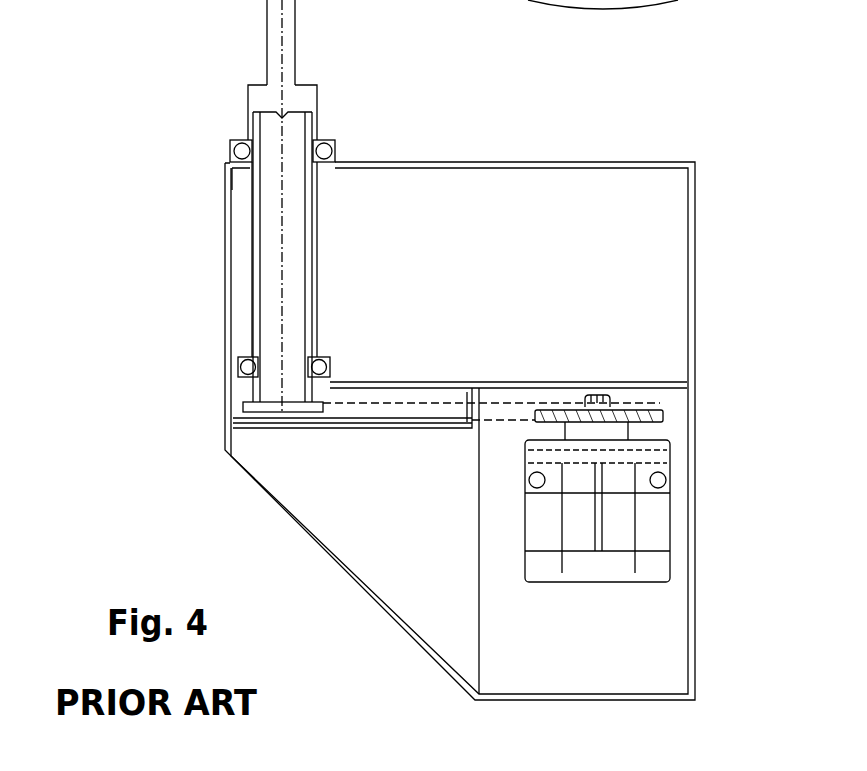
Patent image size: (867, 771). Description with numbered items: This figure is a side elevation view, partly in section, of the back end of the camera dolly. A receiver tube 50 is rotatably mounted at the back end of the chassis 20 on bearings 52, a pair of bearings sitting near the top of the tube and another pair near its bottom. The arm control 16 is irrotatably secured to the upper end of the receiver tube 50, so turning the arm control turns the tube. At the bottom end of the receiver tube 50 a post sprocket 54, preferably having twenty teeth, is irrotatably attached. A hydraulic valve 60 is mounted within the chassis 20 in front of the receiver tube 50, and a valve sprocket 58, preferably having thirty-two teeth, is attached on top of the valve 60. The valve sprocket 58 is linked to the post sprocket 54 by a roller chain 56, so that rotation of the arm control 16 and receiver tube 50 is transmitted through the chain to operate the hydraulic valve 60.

The arm control 16 is at (274, 23).
The chassis 20 is at (224, 315).
The receiver tube 50 is at (315, 124).
The bearings 52 is at (231, 148).
The post sprocket 54 is at (250, 406).
The roller chain 56 is at (393, 428).
The valve sprocket 58 is at (662, 413).
The hydraulic valve 60 is at (670, 456).